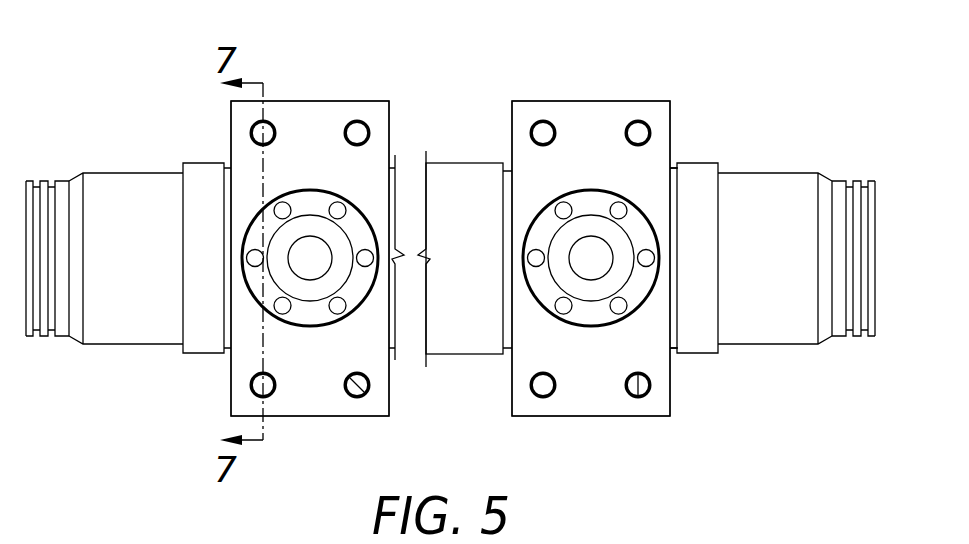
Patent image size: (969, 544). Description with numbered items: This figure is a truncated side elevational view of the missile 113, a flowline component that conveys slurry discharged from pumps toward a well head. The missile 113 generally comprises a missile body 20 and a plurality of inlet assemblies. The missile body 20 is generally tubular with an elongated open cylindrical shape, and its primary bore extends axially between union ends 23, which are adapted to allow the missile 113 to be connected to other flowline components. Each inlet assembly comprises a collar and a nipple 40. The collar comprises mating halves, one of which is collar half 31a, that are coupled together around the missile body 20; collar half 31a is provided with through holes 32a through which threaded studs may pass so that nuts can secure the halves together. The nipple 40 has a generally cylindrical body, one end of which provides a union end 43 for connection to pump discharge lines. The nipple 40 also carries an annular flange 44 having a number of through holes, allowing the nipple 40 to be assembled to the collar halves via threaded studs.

The missile 113 is at (828, 73).
The missile body 20 is at (103, 335).
The union ends 23 is at (28, 181).
The collar half 31a is at (319, 113).
The through holes 32a is at (358, 395).
The nipple 40 is at (319, 333).
The union end 43 is at (348, 282).
The annular flange 44 is at (357, 230).